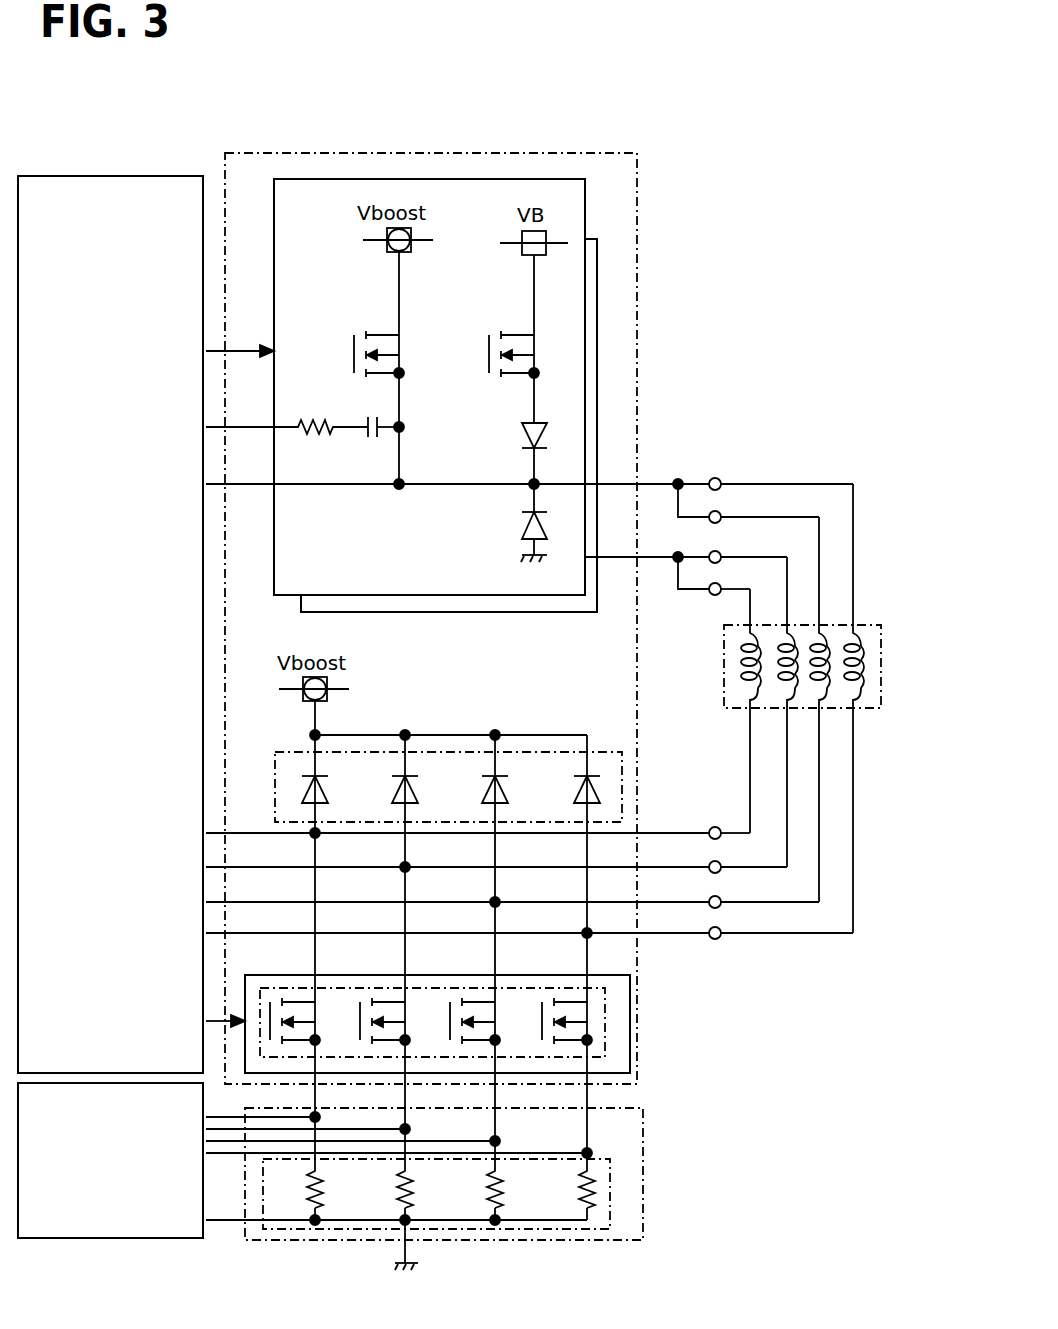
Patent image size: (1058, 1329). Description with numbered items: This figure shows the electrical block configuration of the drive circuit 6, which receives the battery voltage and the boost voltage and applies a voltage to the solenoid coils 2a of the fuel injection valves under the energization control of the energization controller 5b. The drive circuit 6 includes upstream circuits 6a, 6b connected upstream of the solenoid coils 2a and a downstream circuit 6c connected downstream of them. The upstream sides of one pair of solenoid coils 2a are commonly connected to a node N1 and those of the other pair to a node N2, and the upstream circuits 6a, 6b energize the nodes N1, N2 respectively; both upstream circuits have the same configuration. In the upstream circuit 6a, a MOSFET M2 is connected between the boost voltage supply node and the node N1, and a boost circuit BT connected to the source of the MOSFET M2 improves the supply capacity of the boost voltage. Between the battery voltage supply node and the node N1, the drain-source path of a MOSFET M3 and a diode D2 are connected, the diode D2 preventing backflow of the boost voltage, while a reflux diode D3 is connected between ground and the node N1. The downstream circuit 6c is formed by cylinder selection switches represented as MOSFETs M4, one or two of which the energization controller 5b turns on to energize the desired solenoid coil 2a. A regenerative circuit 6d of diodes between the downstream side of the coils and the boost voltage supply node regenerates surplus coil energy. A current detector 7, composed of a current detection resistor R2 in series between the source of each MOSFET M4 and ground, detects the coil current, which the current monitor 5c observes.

The energization controller 5b is at (143, 175).
The current monitor 5c is at (90, 1240).
The drive circuit 6 is at (637, 362).
The upstream circuit 6a is at (585, 208).
The upstream circuit 6b is at (597, 255).
The downstream circuit 6c is at (630, 1037).
The regenerative circuit 6d is at (275, 775).
The current detector 7 is at (645, 1150).
The current detection resistor R2 is at (610, 1205).
The MOSFET M2 is at (437, 340).
The MOSFET M3 is at (565, 340).
The MOSFET M4 is at (605, 1006).
The diode D2 is at (525, 441).
The reflux diode D3 is at (517, 541).
The boost circuit BT is at (342, 406).
The node N1 is at (678, 483).
The node N2 is at (678, 560).
The solenoid coil 2a is at (865, 625).